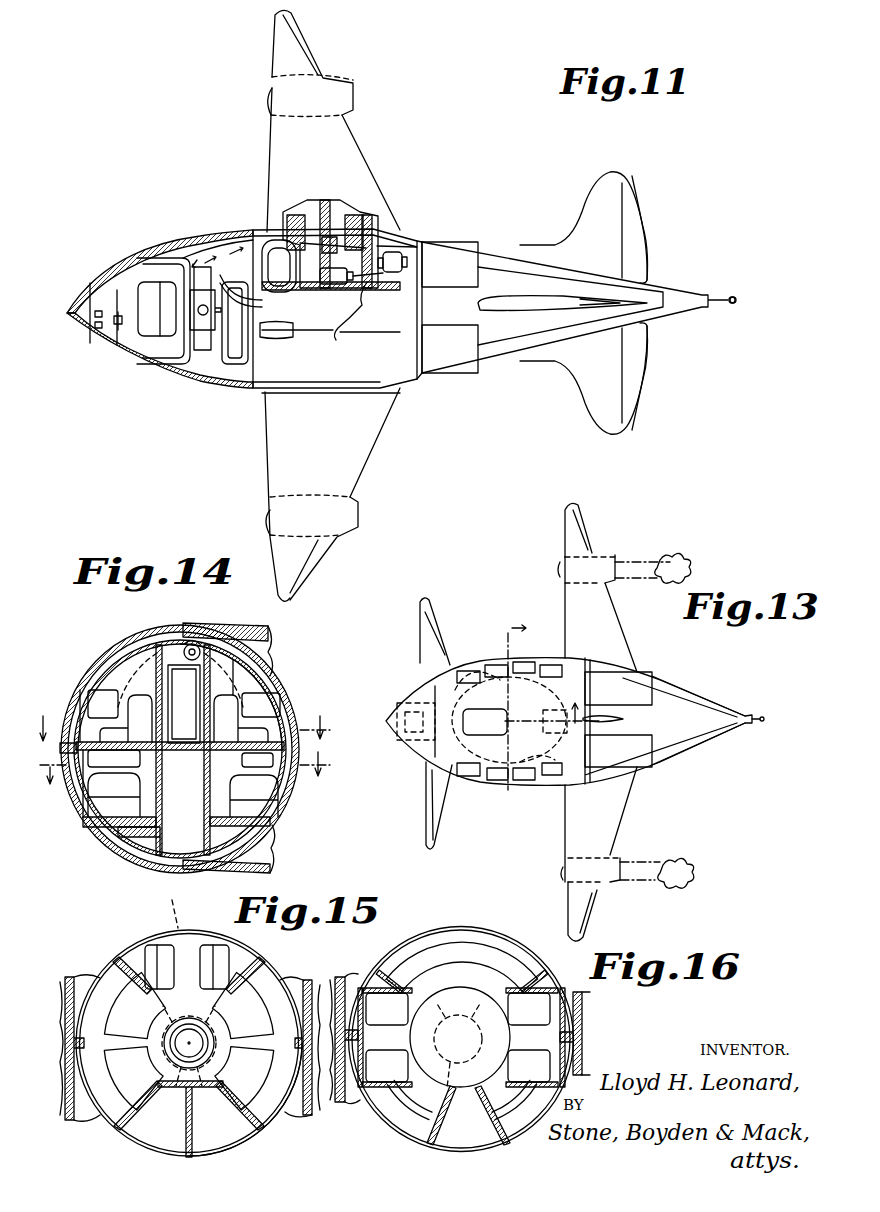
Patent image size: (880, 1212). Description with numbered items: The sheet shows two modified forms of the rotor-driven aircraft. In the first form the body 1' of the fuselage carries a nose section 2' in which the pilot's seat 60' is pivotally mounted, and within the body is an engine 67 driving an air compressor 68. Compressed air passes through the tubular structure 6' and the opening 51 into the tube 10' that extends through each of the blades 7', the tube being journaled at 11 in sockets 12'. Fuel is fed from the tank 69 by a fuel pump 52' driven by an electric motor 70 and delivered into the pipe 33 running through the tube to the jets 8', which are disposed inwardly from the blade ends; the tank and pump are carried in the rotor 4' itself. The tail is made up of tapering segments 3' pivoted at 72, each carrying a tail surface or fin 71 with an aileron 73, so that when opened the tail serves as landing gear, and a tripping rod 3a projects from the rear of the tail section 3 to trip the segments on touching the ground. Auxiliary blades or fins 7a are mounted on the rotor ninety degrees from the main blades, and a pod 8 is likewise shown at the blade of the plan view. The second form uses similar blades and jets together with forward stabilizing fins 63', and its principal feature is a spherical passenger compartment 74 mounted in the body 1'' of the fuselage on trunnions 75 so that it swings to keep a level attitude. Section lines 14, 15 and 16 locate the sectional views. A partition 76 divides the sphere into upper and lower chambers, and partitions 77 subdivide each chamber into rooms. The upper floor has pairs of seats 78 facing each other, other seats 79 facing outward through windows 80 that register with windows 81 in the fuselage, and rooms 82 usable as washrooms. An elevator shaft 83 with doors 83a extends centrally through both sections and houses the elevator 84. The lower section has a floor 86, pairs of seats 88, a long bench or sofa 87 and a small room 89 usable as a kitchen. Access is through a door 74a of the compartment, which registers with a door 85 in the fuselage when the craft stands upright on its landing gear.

In FIG. 11, the body of the fuselage 1' is at (244, 298).
In FIG. 14, the body of the fuselage 1'' is at (180, 730).
In FIG. 13, the body of the fuselage 1'' is at (575, 710).
In FIG. 15, the body of the fuselage 1'' is at (170, 1043).
In FIG. 11, the nose section 2' is at (171, 294).
In FIG. 13, the nose section 2' is at (404, 707).
In FIG. 11, the tapering tail segments 3' is at (578, 292).
In FIG. 13, the tail section 3 is at (698, 716).
In FIG. 11, the tripping rod 3a is at (738, 288).
In FIG. 11, the rotor 4' is at (418, 323).
In FIG. 11, the tubular structure 6' is at (296, 326).
In FIG. 11, the blades 7' is at (337, 344).
In FIG. 13, the blades 7' is at (605, 719).
In FIG. 13, the auxiliary blades or fins 7a is at (623, 719).
In FIG. 11, the jets 8' is at (320, 305).
In FIG. 13, the jets 8' is at (624, 543).
In FIG. 13, the wing tip pod 8 is at (627, 899).
In FIG. 11, the tube 10' is at (330, 230).
In FIG. 11, the housing 11 is at (279, 266).
In FIG. 11, the sockets 12' is at (407, 224).
In FIG. 13, the section line 14- 14 is at (552, 703).
In FIG. 14, the section line 15- 15 is at (183, 716).
In FIG. 14, the section line 16- 16 is at (183, 777).
In FIG. 11, the shaft 33 is at (325, 215).
In FIG. 11, the opening 51 is at (331, 307).
In FIG. 11, the fuel pump 52' is at (354, 304).
In FIG. 11, the pilot's seat 60' is at (135, 337).
In FIG. 13, the forward stabilizing fins 63' is at (416, 723).
In FIG. 11, the engine 67 is at (205, 345).
In FIG. 11, the air compressor 68 is at (238, 328).
In FIG. 11, the fuel tank 69 is at (227, 277).
In FIG. 11, the electric motor 70 is at (396, 270).
In FIG. 11, the tail surface or fin 71 is at (567, 312).
In FIG. 11, the pivot 72 is at (371, 346).
In FIG. 11, the aileron 73 is at (640, 255).
In FIG. 14, the spherical passenger compartment 74 is at (283, 698).
In FIG. 13, the spherical passenger compartment 74 is at (552, 759).
In FIG. 15, the spherical passenger compartment 74 is at (252, 1140).
In FIG. 16, the spherical passenger compartment 74 is at (535, 962).
In FIG. 13, the door 74a is at (504, 714).
In FIG. 15, the door 74a is at (195, 910).
In FIG. 15, the trunnions 75 is at (313, 1100).
In FIG. 16, the trunnions 75 is at (340, 1102).
In FIG. 14, the partition 76 is at (183, 783).
In FIG. 15, the partitions 77 is at (250, 1110).
In FIG. 15, the seats 78 is at (168, 982).
In FIG. 14, the seats 79 is at (140, 718).
In FIG. 15, the seats 79 is at (118, 1025).
In FIG. 14, the windows 80 is at (180, 697).
In FIG. 13, the windows 80 is at (509, 720).
In FIG. 14, the windows 81 is at (88, 690).
In FIG. 13, the windows 81 is at (548, 668).
In FIG. 15, the rooms 82 is at (187, 1138).
In FIG. 14, the elevator shaft 83 is at (247, 646).
In FIG. 15, the elevator shaft 83 is at (213, 1043).
In FIG. 16, the elevator shaft 83 is at (480, 1044).
In FIG. 15, the doors 83a is at (191, 1039).
In FIG. 14, the elevator 84 is at (180, 761).
In FIG. 15, the elevator 84 is at (176, 1043).
In FIG. 13, the door 85 is at (485, 703).
In FIG. 14, the floor 86 is at (132, 834).
In FIG. 16, the long bench or sofa 87 is at (490, 960).
In FIG. 14, the seats 88 is at (107, 792).
In FIG. 16, the seats 88 is at (386, 1020).
In FIG. 16, the small room 89 is at (461, 1112).